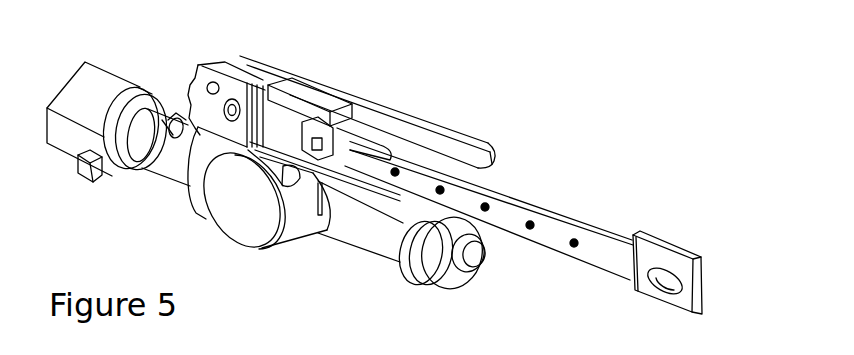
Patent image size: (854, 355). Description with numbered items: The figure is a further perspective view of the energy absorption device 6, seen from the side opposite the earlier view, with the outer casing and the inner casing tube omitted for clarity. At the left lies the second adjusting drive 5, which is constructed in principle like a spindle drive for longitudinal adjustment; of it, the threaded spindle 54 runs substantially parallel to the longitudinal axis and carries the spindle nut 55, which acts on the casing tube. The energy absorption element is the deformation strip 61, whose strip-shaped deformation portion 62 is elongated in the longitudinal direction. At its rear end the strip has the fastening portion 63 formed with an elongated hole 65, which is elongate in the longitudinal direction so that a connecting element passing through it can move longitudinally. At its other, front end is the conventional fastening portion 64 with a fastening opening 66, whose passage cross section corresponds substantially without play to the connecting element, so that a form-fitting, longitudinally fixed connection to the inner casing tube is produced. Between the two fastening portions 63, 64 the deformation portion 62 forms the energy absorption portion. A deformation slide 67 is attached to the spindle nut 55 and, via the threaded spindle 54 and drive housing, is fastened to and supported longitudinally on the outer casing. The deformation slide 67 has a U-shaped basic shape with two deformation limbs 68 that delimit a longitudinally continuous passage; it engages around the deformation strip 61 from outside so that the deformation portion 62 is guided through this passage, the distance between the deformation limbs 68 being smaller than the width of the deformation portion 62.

The second adjusting drive 5 is at (140, 190).
The energy absorption device 6 is at (534, 145).
The threaded spindle 54 is at (370, 237).
The spindle nut 55 is at (243, 230).
The deformation strip 61 is at (570, 210).
The deformation portion 62 is at (492, 211).
The fastening portion 63 is at (692, 253).
The fastening portion 64 is at (206, 76).
The elongated hole 65 is at (685, 281).
The fastening opening 66 is at (235, 93).
The deformation slide 67 is at (318, 97).
The deformation limbs 68 is at (356, 155).